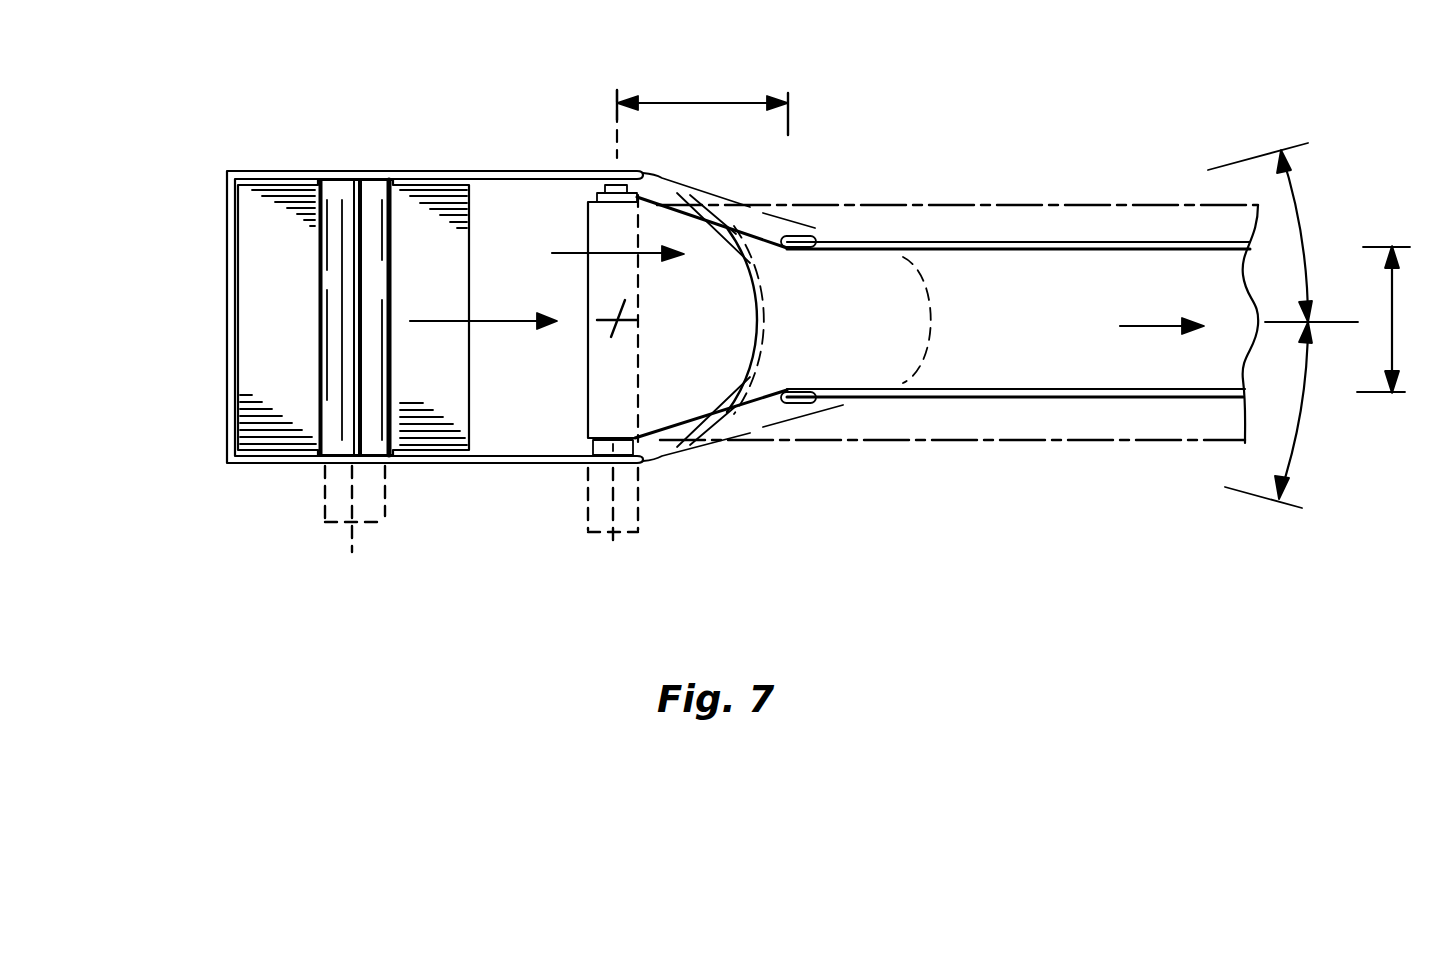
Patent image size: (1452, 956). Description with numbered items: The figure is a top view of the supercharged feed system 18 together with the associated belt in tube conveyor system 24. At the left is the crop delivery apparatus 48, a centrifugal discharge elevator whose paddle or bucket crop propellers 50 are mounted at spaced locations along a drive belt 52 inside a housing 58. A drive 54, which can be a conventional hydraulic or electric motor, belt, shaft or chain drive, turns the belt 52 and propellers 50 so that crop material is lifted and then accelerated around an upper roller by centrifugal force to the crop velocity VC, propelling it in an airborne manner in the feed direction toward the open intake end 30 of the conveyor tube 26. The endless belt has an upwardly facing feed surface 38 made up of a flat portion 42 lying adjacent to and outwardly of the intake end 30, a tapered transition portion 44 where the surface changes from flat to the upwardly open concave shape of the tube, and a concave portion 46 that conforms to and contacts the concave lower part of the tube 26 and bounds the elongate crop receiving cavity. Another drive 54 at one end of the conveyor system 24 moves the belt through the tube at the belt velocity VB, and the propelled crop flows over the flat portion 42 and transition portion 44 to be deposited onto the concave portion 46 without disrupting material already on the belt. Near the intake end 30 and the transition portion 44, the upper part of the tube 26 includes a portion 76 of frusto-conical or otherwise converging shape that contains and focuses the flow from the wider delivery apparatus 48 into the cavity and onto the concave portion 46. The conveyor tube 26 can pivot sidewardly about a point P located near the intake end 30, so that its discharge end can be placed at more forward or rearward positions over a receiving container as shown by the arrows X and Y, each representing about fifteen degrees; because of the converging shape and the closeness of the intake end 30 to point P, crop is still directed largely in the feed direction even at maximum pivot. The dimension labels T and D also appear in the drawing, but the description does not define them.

The supercharged feed system 18 is at (409, 251).
The belt in tube conveyor system 24 is at (1114, 192).
The conveyor tube 26 is at (1018, 263).
The intake end 30 is at (596, 251).
The feed surface 38 is at (708, 370).
The flat portion 42 is at (662, 375).
The transition portion 44 is at (759, 256).
The concave portion 46 is at (1025, 335).
The crop delivery apparatus 48 is at (353, 267).
The crop propellers 50 is at (275, 314).
The drive belt 52 is at (341, 205).
The drive 54 is at (372, 520).
The housing 58 is at (226, 413).
The converging portion 76 is at (870, 343).
The dimension T is at (697, 103).
The pivot point P is at (620, 317).
The crop velocity VC is at (481, 325).
The belt velocity VB is at (1158, 327).
The forward pivot direction arrow X is at (1298, 197).
The rearward pivot direction arrow Y is at (1292, 443).
The diameter D is at (1392, 312).